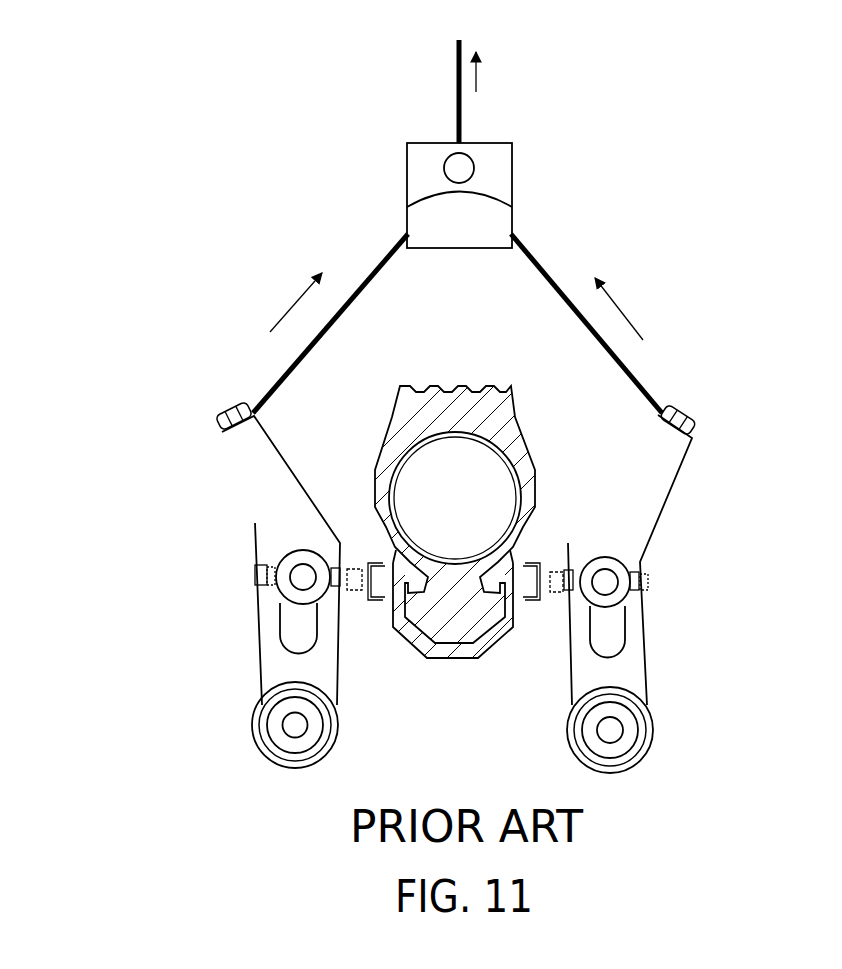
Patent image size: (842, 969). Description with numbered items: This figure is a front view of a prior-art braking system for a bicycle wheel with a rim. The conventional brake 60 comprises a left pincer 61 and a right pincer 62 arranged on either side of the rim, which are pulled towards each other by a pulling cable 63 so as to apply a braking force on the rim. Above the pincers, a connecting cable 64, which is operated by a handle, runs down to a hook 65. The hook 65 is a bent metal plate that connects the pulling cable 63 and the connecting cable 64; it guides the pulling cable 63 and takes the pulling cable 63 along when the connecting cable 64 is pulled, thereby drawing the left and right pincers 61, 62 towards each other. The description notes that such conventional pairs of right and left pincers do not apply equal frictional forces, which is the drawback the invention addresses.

The conventional brake 60 is at (480, 566).
The left pincer 61 is at (262, 527).
The right pincer 62 is at (664, 490).
The pulling cable 63 is at (355, 283).
The connecting cable 64 is at (462, 108).
The hook 65 is at (502, 206).